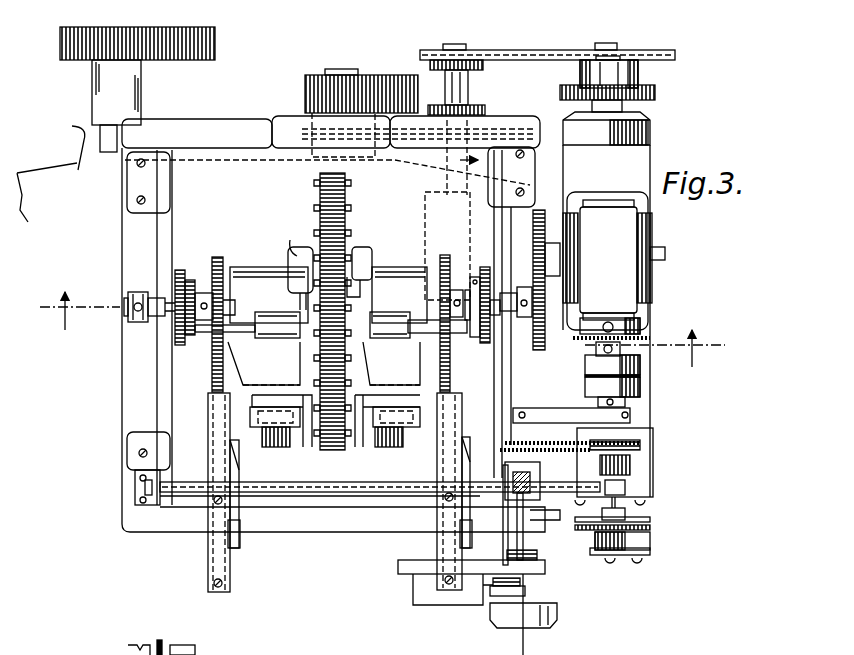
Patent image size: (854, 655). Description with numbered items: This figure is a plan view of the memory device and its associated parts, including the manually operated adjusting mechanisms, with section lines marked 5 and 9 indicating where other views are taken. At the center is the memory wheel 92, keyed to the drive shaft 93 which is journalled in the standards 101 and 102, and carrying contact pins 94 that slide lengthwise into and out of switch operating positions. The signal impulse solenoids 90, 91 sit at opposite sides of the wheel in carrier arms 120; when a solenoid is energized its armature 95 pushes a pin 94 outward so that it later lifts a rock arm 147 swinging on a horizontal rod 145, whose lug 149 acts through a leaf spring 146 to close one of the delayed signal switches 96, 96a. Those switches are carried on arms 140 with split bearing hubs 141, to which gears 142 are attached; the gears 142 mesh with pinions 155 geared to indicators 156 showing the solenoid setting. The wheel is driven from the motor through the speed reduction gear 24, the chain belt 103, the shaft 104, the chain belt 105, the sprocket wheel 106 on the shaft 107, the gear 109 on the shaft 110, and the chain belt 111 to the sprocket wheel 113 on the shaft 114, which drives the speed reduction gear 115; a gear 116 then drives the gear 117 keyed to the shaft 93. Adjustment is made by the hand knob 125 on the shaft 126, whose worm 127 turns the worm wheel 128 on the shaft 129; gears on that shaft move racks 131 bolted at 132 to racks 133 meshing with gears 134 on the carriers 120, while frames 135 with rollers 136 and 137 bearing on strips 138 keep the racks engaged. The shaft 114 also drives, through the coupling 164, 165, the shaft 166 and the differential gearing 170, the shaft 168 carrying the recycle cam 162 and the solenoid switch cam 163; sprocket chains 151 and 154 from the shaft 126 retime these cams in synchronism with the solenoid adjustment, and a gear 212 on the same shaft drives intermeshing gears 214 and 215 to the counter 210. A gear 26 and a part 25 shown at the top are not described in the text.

The speed reduction gear 24 is at (65, 141).
The shaft 25 is at (62, 42).
The gear 26 is at (216, 36).
The signal impulse solenoid 90 is at (274, 447).
The signal impulse solenoid 91 is at (387, 445).
The memory wheel 92 is at (347, 190).
The drive shaft 93 is at (135, 292).
The contact pins 94 is at (347, 208).
The armatures 95 is at (338, 435).
The delayed signal switch 96 is at (362, 252).
The delayed signal switch 96a is at (277, 241).
The standard 101 is at (160, 374).
The standard 102 is at (500, 370).
The chain belt 103 is at (312, 125).
The shaft 104 is at (470, 85).
The chain belt 105 is at (540, 52).
The sprocket wheel 106 is at (640, 65).
The shaft 107 is at (615, 44).
The gear 109 is at (656, 92).
The shaft 110 is at (583, 68).
The chain belt 111 is at (645, 350).
The sprocket wheel 113 is at (603, 324).
The shaft 114 is at (640, 363).
The speed reduction gear 115 is at (614, 261).
The gear 116 is at (540, 212).
The gear 117 is at (510, 340).
The solenoid carrier arm 120 is at (327, 326).
The adjusting knob 125 is at (558, 612).
The shaft 126 is at (525, 537).
The worm 127 is at (532, 480).
The worm wheel 128 is at (535, 510).
The shaft 129 is at (347, 491).
The rack 131 is at (210, 435).
The bolt 132 is at (230, 583).
The rack 133 is at (212, 383).
The gear 134 is at (218, 258).
The frame 135 is at (238, 543).
The roller 136 is at (210, 532).
The roller 137 is at (228, 445).
The strip 138 is at (209, 405).
The arm 140 is at (190, 340).
The split bearing hub 141 is at (180, 272).
The gear 142 is at (175, 345).
The horizontal rod 145 is at (372, 322).
The leaf spring 146 is at (300, 310).
The rock arm 147 is at (302, 345).
The lug 149 is at (298, 302).
The sprocket chain 151 is at (540, 455).
The sprocket chain 154 is at (570, 437).
The pinion 155 is at (160, 645).
The indicator 156 is at (190, 645).
The recycle cam 162 is at (652, 525).
The solenoid switch cam 163 is at (652, 548).
The coupling member 164 is at (586, 363).
The coupling member 165 is at (586, 388).
The shaft 166 is at (641, 390).
The shaft 168 is at (626, 518).
The differential gearing 170 is at (635, 468).
The counter 210 is at (425, 594).
The gear 212 is at (540, 556).
The gear 214 is at (527, 590).
The gear 215 is at (525, 580).
The section line 5 is at (382, 320).
The section line 9 is at (506, 402).